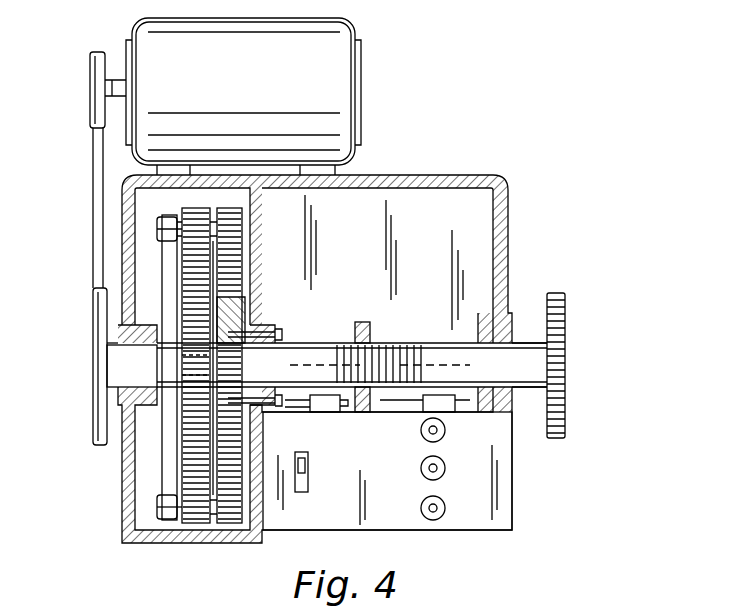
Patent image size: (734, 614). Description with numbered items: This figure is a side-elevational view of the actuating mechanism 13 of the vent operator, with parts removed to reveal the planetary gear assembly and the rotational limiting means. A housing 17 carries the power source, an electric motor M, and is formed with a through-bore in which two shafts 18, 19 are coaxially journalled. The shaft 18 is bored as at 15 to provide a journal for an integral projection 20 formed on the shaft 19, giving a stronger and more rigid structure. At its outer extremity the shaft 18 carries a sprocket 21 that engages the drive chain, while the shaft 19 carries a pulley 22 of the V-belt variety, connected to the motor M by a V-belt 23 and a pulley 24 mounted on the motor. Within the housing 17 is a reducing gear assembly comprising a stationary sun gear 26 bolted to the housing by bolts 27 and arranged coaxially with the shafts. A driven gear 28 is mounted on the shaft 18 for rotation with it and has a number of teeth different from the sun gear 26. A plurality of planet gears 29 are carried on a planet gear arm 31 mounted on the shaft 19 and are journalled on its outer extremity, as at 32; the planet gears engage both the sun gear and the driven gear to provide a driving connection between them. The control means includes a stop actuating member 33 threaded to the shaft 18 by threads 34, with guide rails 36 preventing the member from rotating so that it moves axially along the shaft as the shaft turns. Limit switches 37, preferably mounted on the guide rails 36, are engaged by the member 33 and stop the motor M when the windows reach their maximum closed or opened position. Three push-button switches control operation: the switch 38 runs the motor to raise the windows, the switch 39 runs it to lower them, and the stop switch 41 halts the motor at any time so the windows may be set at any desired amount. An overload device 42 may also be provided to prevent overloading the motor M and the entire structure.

The actuating mechanism 13 is at (510, 232).
The housing 17 is at (430, 177).
The electric motor M is at (345, 70).
The pulley 24 is at (90, 112).
The V-belt 23 is at (97, 208).
The pulley 22 is at (93, 416).
The shaft 19 is at (115, 372).
The shaft 18 is at (305, 346).
The threads 34 is at (395, 346).
The stop actuating member 33 is at (366, 322).
The sprocket 21 is at (560, 408).
The bore 15 is at (180, 398).
The journal 32 is at (155, 240).
The planet gears 29 is at (230, 208).
The sun gear 26 is at (245, 270).
The bolts 27 is at (275, 330).
The integral projection 20 is at (185, 345).
The planet gear arm 31 is at (168, 440).
The driven gear 28 is at (190, 455).
The guide rails 36 is at (298, 410).
The limit switches 37 is at (330, 412).
The switch 38 is at (422, 436).
The stop switch 41 is at (422, 474).
The switch 39 is at (442, 516).
The overload device 42 is at (306, 470).